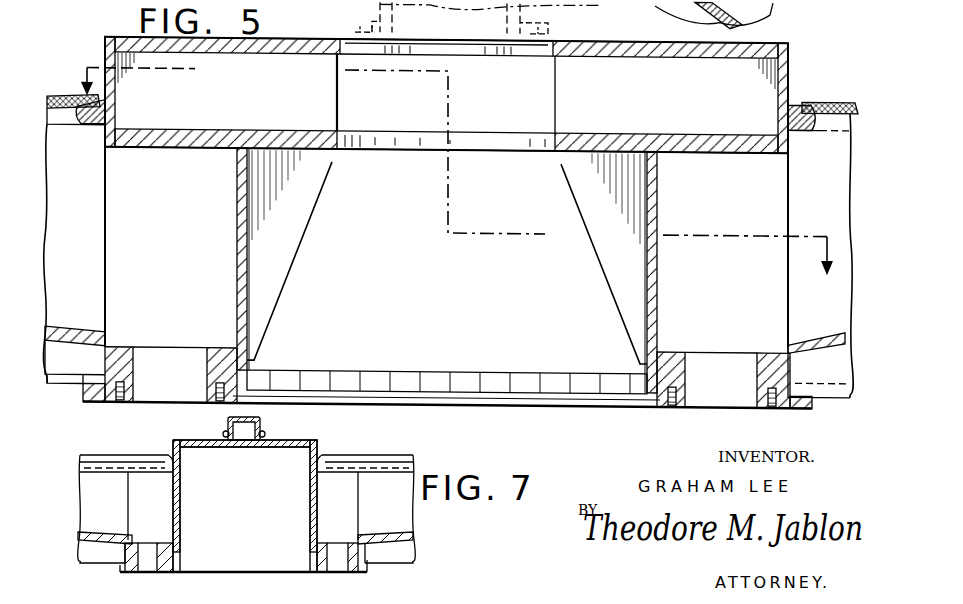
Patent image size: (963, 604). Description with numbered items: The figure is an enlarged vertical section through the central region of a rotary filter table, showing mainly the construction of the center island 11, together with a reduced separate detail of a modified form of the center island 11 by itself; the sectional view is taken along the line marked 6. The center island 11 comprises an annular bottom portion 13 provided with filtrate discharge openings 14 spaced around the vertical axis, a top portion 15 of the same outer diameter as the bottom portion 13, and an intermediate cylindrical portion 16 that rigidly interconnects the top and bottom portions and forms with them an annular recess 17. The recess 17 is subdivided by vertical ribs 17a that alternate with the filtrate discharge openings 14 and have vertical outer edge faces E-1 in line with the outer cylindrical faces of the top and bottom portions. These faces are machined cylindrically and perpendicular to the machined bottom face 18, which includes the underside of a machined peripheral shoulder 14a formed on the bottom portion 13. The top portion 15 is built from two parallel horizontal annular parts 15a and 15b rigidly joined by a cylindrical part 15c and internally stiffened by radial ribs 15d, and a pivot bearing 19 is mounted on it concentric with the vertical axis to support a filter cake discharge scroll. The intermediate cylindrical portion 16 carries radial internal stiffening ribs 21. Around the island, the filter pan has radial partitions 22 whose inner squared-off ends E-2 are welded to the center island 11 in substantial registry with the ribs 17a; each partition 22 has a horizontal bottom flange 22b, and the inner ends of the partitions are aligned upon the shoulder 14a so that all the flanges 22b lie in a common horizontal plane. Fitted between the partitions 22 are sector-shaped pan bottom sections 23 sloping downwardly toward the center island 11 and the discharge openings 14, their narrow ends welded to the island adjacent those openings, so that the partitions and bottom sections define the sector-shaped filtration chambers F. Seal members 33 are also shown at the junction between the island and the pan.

The center island 11 is at (808, 58).
The pivot bearing 19 is at (540, 12).
The top portion 15 is at (474, 137).
The horizontal annular part 15a is at (665, 48).
The horizontal annular part 15b is at (662, 138).
The cylindrical part 15c is at (113, 87).
The radial ribs 15d is at (570, 102).
The seal member 33 is at (106, 106).
The section line 6- 6 is at (446, 162).
The radial partitions 22 is at (78, 180).
The sector-shaped filtration chambers F is at (823, 178).
The sector-shaped pan bottom sections 23 is at (80, 333).
The annular bottom portion 13 is at (103, 360).
The horizontal bottom flange 22b is at (62, 382).
The annular recess 17 is at (425, 273).
The vertical ribs 17a is at (127, 204).
The intermediate cylindrical portion 16 is at (658, 291).
The radial internal stiffening ribs 21 is at (300, 206).
The filtrate discharge openings 14 is at (180, 366).
The machined peripheral shoulder 14a is at (90, 395).
The machined bottom face 18 is at (133, 406).
The inner squared-off ends E-2 is at (106, 252).
The vertical outer edge faces E-1 is at (100, 292).